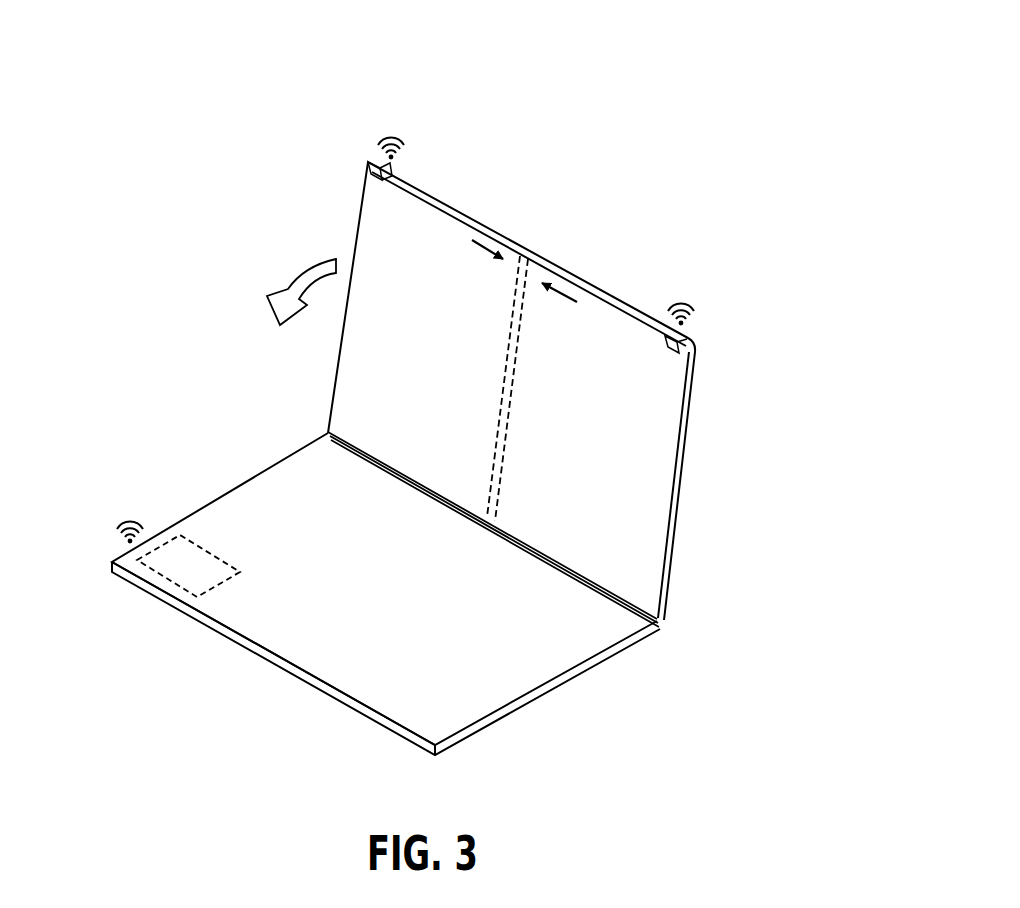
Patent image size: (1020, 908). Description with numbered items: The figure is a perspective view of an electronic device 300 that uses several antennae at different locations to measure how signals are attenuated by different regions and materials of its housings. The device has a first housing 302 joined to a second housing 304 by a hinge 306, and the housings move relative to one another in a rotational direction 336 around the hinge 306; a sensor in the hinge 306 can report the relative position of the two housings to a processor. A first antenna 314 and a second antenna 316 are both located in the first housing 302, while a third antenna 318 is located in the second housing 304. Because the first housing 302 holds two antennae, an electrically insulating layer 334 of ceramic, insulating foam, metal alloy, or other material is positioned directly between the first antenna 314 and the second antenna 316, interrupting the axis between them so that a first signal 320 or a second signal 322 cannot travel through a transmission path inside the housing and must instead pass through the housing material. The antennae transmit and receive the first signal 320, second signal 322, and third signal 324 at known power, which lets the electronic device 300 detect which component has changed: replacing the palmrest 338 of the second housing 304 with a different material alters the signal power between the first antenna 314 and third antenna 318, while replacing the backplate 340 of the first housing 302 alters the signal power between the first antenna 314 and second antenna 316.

The electronic device 300 is at (650, 101).
The first housing 302 is at (695, 398).
The second housing 304 is at (558, 682).
The hinge 306 is at (657, 622).
The first antenna 314 is at (393, 171).
The second antenna 316 is at (682, 341).
The third antenna 318 is at (204, 572).
The first signal 320 is at (383, 144).
The second signal 322 is at (673, 308).
The third signal 324 is at (119, 528).
The electrically insulating layer 334 is at (527, 262).
The rotational direction 336 is at (292, 290).
The palmrest 338 is at (300, 630).
The backplate 340 is at (695, 500).